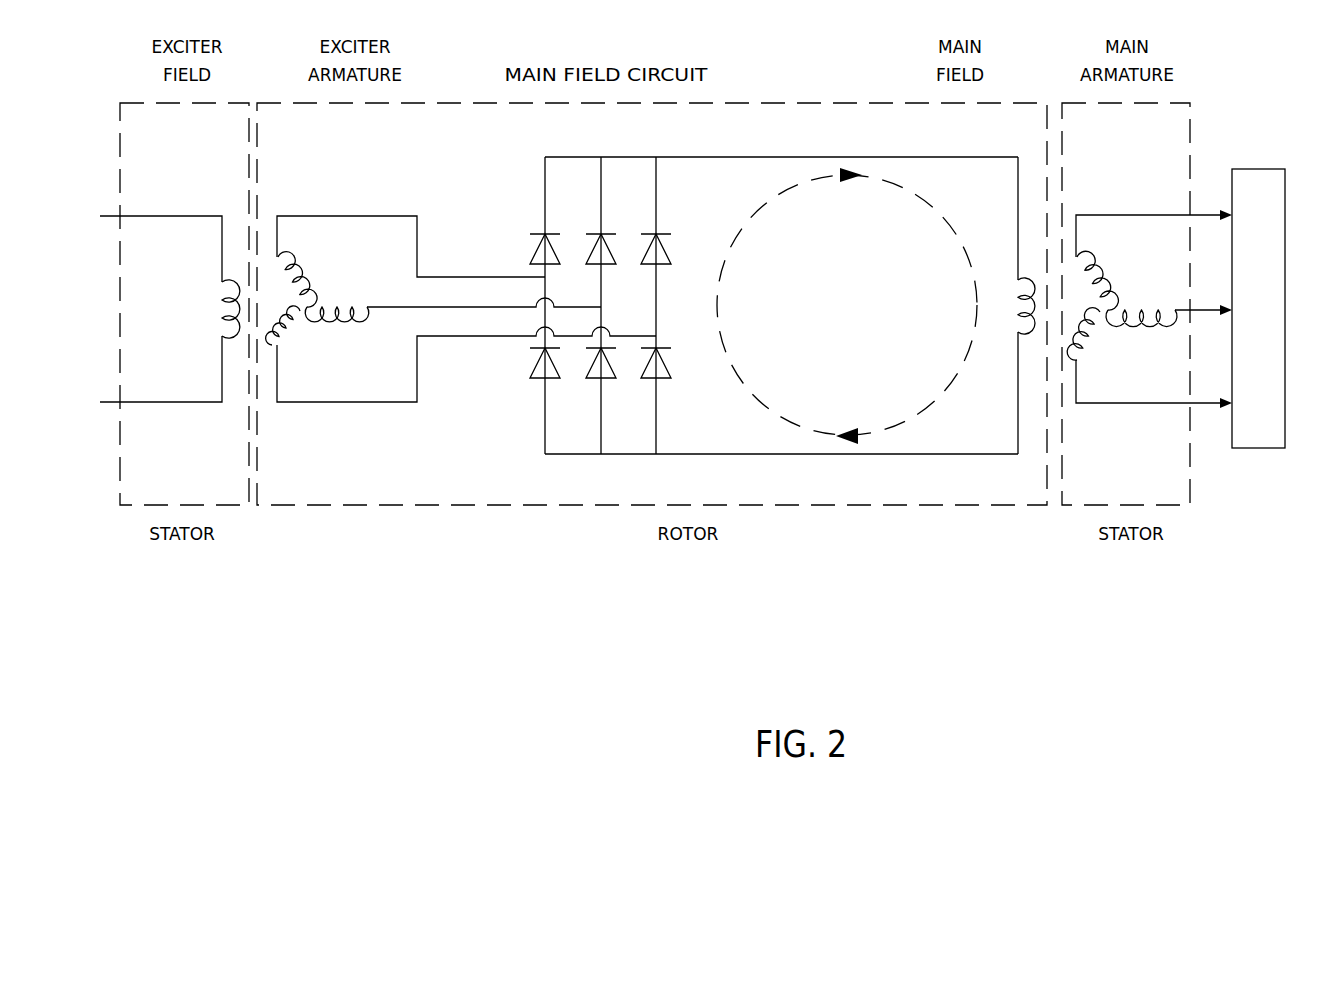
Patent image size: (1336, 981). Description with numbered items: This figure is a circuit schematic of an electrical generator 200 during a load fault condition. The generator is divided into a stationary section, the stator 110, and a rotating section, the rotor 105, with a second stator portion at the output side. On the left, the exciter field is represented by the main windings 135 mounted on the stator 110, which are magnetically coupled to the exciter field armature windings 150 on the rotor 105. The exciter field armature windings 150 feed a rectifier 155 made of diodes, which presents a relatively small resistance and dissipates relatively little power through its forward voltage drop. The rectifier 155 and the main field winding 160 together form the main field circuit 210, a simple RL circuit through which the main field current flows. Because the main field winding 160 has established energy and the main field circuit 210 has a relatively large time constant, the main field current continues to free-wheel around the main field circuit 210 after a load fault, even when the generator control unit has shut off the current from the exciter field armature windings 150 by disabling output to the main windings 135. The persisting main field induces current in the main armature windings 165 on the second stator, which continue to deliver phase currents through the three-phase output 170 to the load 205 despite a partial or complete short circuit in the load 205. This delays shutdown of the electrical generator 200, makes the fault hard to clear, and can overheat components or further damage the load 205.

The rotor 105 is at (704, 494).
The stator 110 is at (201, 488).
The main windings 135 is at (221, 307).
The exciter field armature windings 150 is at (284, 330).
The rectifier 155 is at (513, 243).
The main field winding 160 is at (1016, 335).
The main armature windings 165 is at (1091, 337).
The three-phase output 170 is at (1212, 138).
The electrical generator 200 is at (271, 582).
The load 205 is at (1285, 425).
The main field circuit 210 is at (807, 157).